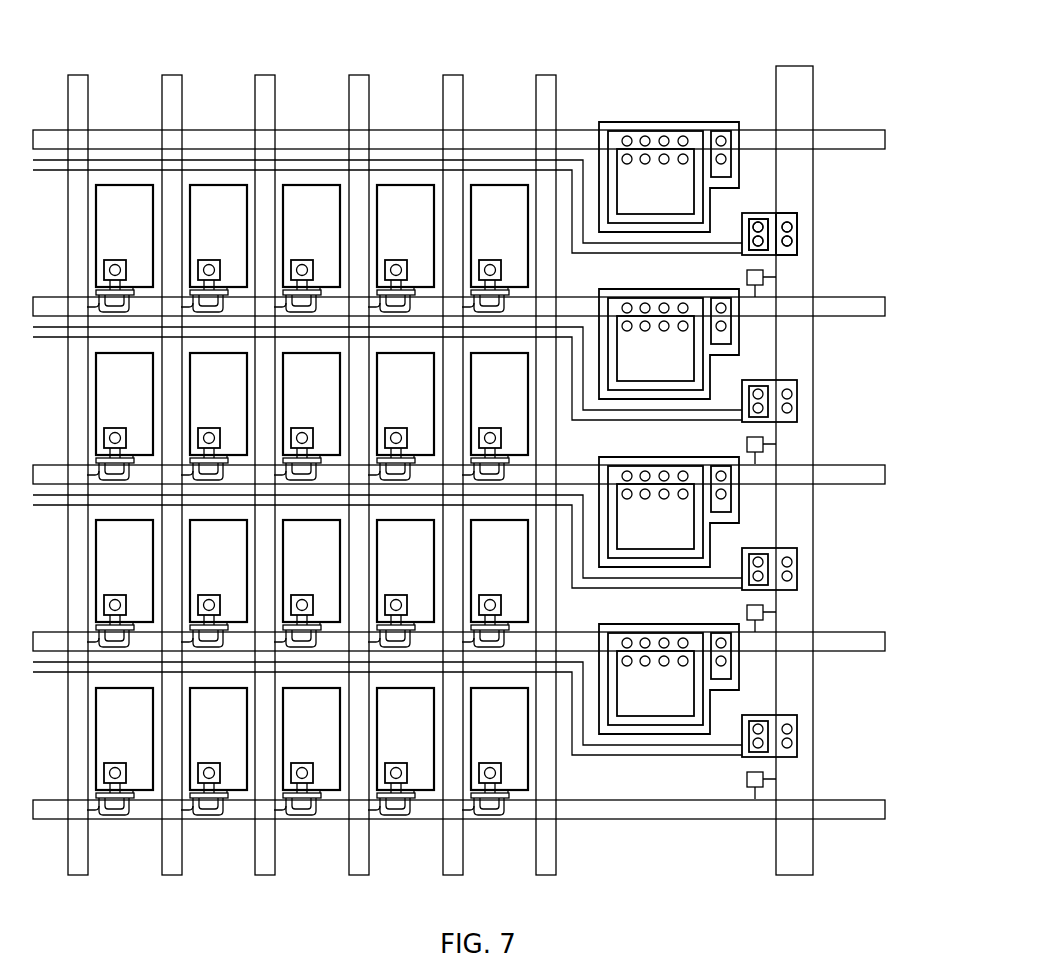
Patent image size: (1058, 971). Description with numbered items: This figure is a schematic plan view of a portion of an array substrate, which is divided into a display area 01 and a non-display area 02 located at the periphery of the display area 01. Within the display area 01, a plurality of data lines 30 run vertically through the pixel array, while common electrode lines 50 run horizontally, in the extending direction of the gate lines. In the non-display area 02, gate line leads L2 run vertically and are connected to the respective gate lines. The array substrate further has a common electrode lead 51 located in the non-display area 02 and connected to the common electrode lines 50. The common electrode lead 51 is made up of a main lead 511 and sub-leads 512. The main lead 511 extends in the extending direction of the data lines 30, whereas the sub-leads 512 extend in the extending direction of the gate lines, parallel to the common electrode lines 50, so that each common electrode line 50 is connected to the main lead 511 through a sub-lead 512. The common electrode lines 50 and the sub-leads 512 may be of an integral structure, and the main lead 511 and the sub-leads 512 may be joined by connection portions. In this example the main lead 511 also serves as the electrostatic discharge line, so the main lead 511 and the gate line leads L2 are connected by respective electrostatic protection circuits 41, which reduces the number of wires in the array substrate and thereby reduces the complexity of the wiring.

The display area 01 is at (35, 72).
The non-display area 02 is at (893, 72).
The data line 30 is at (543, 100).
The common electrode line 50 is at (393, 168).
The signal line lead L2 is at (843, 146).
The common electrode lead 51 is at (905, 190).
The main lead 511 is at (803, 236).
The sub-lead 512 is at (712, 238).
The electrostatic protection circuit 41 is at (762, 449).